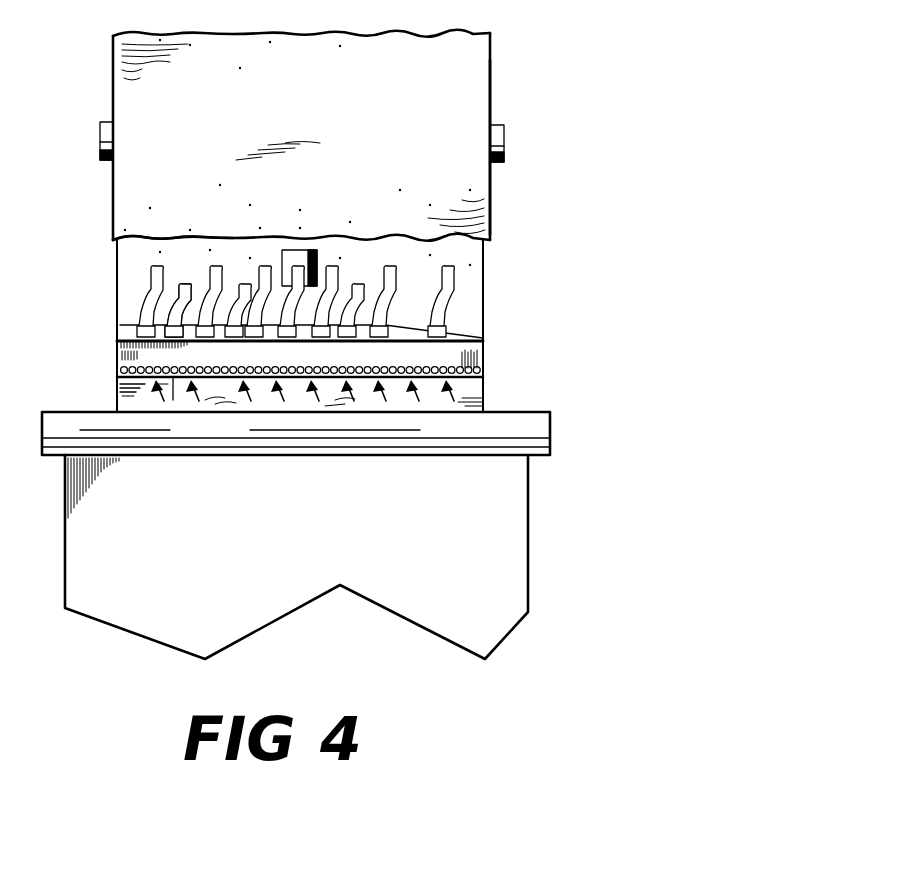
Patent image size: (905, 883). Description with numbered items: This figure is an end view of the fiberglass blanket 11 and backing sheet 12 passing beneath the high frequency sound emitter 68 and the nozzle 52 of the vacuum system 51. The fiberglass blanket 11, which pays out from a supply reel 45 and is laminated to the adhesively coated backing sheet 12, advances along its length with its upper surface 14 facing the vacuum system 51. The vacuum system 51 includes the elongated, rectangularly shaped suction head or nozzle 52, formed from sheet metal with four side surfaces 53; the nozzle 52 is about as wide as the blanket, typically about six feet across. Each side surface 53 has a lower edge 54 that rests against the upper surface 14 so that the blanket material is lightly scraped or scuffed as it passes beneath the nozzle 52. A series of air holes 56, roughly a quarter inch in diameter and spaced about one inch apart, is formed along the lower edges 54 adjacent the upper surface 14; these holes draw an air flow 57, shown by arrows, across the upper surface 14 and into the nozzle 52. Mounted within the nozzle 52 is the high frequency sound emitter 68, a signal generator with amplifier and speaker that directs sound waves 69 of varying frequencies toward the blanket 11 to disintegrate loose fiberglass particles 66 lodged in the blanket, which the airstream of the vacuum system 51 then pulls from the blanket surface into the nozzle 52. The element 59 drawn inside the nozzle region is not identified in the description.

The fiberglass blanket 11 is at (493, 62).
The supply reel 45 is at (462, 104).
The loose fiberglass particles 66 is at (148, 205).
The agitator block 59 is at (413, 268).
The high frequency sound emitter 68 is at (204, 278).
The sound waves 69 is at (456, 291).
The vacuum system 51 is at (102, 336).
The side surfaces 53 is at (166, 352).
The air holes 56 is at (440, 366).
The suction head or nozzle 52 is at (480, 365).
The upper surface 14 is at (118, 386).
The air flow 57 is at (310, 397).
The lower edge 54 is at (173, 400).
The backing sheet 12 is at (556, 426).